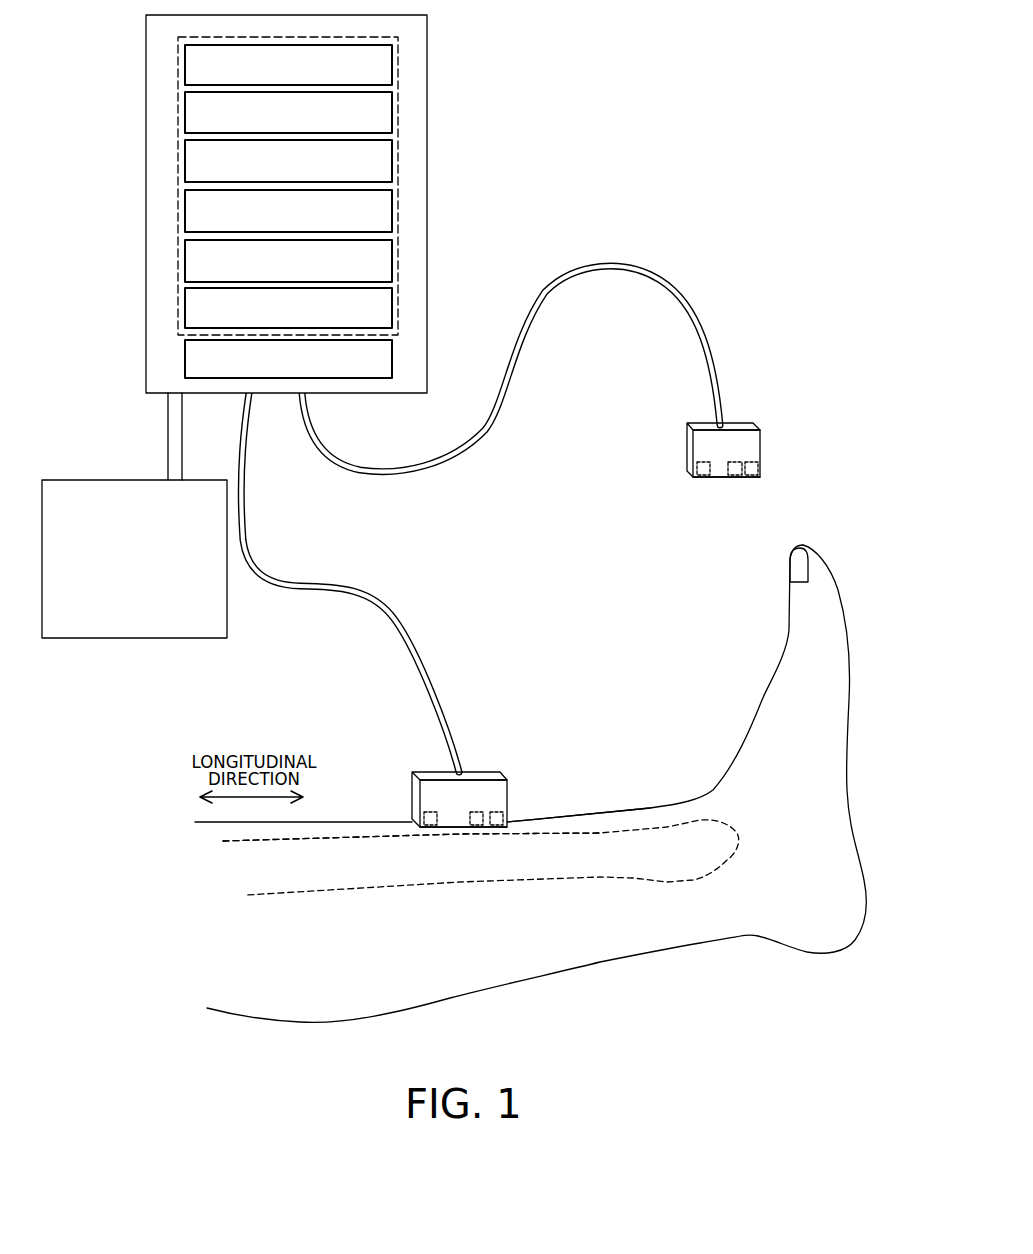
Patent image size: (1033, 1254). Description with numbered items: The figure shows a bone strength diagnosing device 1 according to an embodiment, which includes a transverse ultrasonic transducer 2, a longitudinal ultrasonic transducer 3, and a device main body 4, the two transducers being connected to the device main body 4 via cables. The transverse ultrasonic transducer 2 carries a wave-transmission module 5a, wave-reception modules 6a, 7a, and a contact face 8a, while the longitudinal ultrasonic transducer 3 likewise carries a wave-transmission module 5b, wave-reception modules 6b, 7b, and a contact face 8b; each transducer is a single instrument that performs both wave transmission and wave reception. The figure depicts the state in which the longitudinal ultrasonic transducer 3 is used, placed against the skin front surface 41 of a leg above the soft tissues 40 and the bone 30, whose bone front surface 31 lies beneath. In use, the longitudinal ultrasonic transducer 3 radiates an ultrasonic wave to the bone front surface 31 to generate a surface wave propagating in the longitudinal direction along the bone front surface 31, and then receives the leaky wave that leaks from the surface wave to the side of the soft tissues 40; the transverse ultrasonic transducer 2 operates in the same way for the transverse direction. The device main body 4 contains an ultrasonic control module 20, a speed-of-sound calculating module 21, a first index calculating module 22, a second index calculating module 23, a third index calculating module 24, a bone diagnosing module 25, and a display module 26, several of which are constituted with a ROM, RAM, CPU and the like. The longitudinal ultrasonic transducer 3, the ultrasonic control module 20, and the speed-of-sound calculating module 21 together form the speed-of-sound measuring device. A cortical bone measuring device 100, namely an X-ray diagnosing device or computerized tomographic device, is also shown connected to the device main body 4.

The bone strength diagnosing device 1 is at (662, 110).
The transverse ultrasonic transducer 2 is at (739, 428).
The longitudinal ultrasonic transducer 3 is at (473, 778).
The device main body 4 is at (428, 33).
The wave-transmission module 5a is at (700, 480).
The wave-reception module 6a is at (733, 480).
The wave-reception module 7a is at (752, 480).
The contact face 8a is at (718, 480).
The wave-transmission module 5b is at (433, 812).
The wave-reception module 6b is at (478, 808).
The wave-reception module 7b is at (500, 813).
The contact face 8b is at (460, 828).
The ultrasonic control module 20 is at (393, 61).
The speed-of-sound calculating module 21 is at (393, 108).
The first index calculating module 22 is at (393, 157).
The second index calculating module 23 is at (393, 206).
The third index calculating module 24 is at (393, 256).
The bone diagnosing module 25 is at (393, 304).
The display module 26 is at (393, 355).
The bone 30 is at (371, 850).
The bone front surface 31 is at (399, 840).
The soft tissues 40 is at (540, 828).
The skin front surface 41 is at (522, 818).
The cortical bone measuring device 100 is at (232, 630).